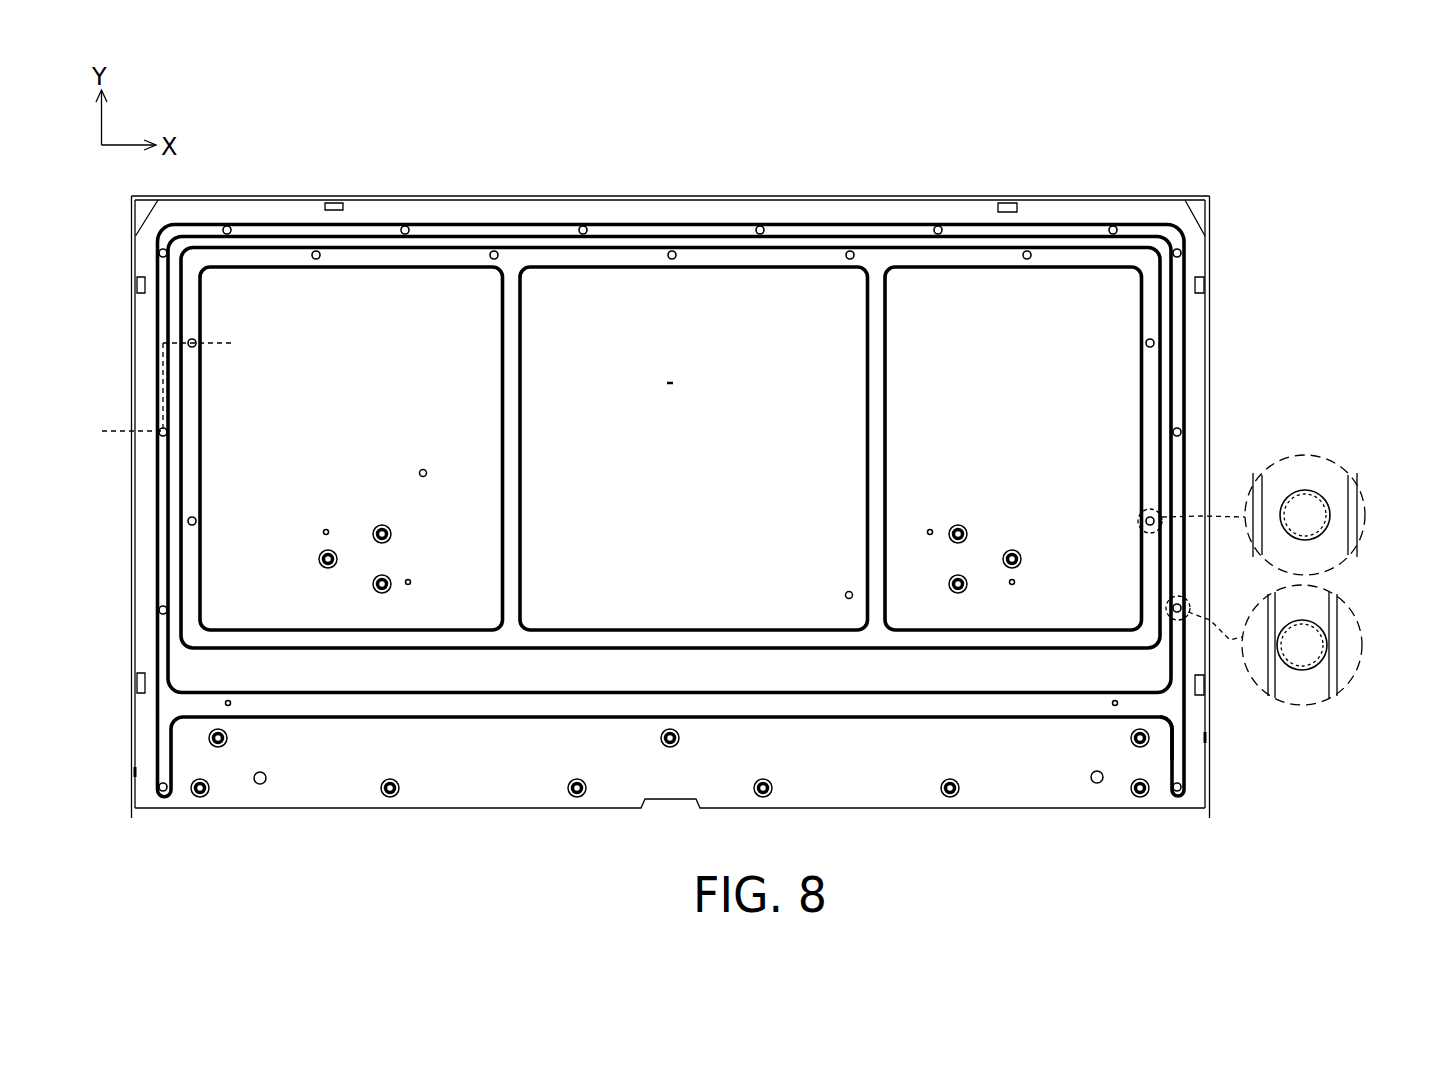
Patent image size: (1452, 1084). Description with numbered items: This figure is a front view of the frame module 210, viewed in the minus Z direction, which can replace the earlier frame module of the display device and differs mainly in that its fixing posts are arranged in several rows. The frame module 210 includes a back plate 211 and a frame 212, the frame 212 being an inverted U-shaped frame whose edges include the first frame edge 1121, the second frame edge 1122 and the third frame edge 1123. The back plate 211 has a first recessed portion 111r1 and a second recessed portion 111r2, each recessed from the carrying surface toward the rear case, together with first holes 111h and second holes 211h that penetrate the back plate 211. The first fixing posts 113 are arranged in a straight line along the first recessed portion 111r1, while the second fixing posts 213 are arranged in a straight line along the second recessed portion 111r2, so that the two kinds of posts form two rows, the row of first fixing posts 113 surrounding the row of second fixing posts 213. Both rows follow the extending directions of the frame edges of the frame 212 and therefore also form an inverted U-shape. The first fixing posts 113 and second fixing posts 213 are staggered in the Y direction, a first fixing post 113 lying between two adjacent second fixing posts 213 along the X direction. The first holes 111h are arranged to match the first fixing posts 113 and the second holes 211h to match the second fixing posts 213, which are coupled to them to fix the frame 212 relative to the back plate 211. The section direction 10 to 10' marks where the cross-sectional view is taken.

The frame module 210 is at (594, 158).
The first fixing post 113 is at (405, 227).
The second fixing post 213 is at (847, 251).
The second frame edge 1122 is at (1047, 196).
The direction 10-10' section line end 10' is at (207, 311).
The direction 10-10' section line 10 is at (127, 389).
The third frame edge 1123 is at (128, 507).
The second recessed portion 111r2 is at (1150, 393).
The second hole 211h is at (1312, 492).
The first hole 111h is at (1310, 622).
The first recessed portion 111r1 is at (1180, 735).
The frame 212 is at (1213, 768).
The first frame edge 1121 is at (1213, 797).
The back plate 211 is at (1018, 788).